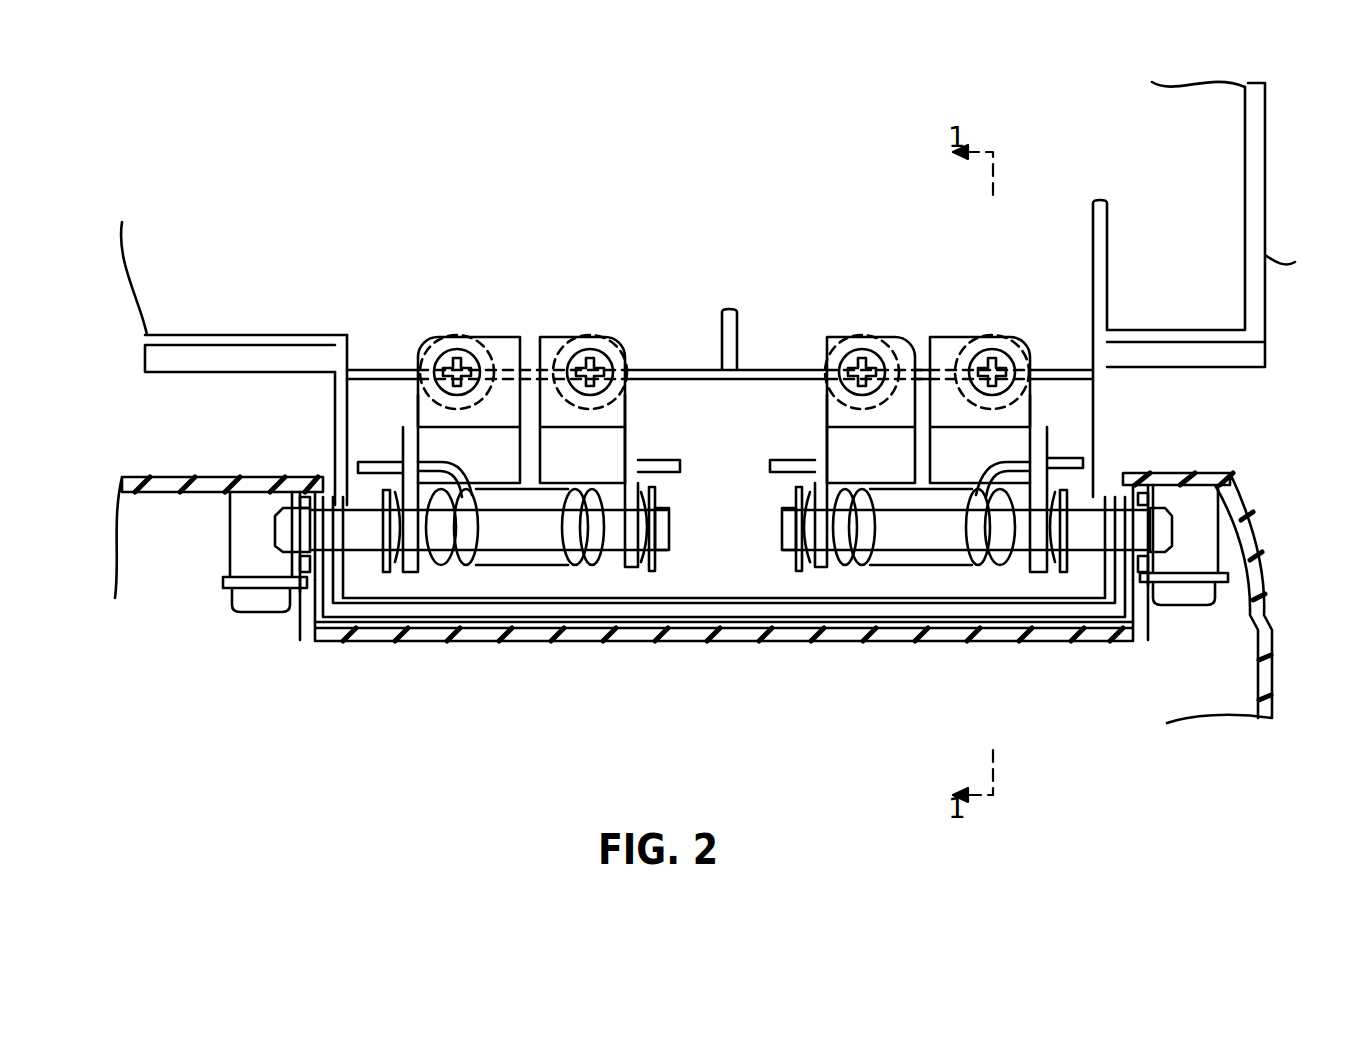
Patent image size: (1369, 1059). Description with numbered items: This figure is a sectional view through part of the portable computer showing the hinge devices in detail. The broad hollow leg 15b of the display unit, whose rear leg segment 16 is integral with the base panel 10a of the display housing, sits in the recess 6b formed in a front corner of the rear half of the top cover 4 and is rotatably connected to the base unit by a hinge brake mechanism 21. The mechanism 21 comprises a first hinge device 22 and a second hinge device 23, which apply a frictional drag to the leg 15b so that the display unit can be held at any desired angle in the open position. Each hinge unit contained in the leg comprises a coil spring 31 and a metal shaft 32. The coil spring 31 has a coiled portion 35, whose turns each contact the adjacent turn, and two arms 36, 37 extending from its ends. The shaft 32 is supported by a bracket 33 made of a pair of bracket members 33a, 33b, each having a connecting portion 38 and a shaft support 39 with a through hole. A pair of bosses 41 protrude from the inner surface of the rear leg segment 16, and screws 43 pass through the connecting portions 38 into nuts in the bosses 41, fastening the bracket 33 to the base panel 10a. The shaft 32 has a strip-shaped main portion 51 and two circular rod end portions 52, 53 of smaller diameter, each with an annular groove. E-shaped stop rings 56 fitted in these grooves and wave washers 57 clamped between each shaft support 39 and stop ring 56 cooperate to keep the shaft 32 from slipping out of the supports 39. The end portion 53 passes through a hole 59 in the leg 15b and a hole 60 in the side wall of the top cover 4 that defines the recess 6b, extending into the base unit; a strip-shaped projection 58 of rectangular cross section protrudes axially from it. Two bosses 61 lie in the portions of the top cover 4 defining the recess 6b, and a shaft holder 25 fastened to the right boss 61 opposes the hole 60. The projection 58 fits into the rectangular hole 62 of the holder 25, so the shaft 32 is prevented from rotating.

The top cover 4 is at (190, 472).
The recess 6b is at (712, 630).
The base panel 10a is at (1267, 262).
The leg 15b is at (336, 396).
The rear leg segment 16 is at (343, 432).
The hinge brake mechanism 21 is at (726, 475).
The first hinge device 22 is at (779, 491).
The second hinge device 23 is at (641, 442).
The shaft holder 25 is at (300, 592).
The coil spring 31 is at (590, 556).
The shaft 32 is at (450, 566).
The bracket 33 is at (724, 356).
The bracket member 33a is at (782, 379).
The bracket member 33b is at (485, 337).
The coiled portion 35 is at (523, 567).
The arm 36 is at (670, 474).
The arm 37 is at (384, 465).
The connecting portion 38 is at (440, 412).
The shaft support 39 is at (415, 566).
The boss 41 is at (442, 350).
The screw 43 is at (434, 366).
The main portion 51 is at (555, 516).
The end portion 52 is at (365, 570).
The end portion 53 is at (669, 530).
The E-shaped stop ring 56 is at (660, 566).
The wave washer 57 is at (382, 506).
The projection 58 is at (275, 546).
The hole 59 is at (331, 582).
The hole 60 is at (306, 492).
The boss 61 is at (245, 510).
The rectangular hole 62 is at (285, 522).